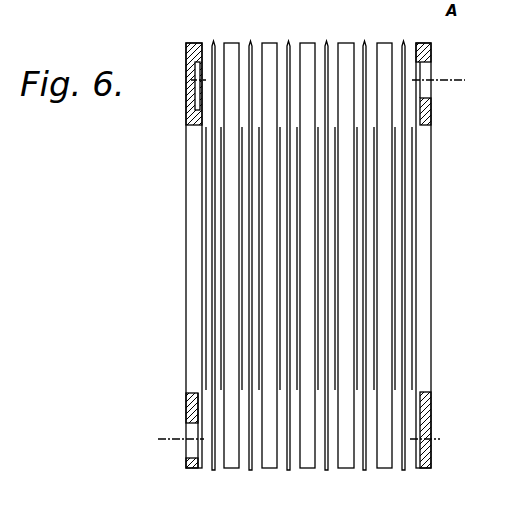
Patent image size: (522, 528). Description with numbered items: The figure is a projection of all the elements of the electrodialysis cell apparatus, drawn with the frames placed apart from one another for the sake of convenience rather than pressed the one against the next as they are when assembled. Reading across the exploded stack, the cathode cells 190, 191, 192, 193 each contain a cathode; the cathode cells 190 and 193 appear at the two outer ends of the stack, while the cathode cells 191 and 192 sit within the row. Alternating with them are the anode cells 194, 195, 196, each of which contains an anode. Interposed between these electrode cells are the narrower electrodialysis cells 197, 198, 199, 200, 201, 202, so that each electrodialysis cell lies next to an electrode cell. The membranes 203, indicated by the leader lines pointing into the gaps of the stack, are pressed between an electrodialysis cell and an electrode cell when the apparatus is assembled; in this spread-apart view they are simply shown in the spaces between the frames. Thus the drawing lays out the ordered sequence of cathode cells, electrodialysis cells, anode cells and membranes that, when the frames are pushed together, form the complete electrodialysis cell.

The cathode cell 190 is at (189, 467).
The cathode cell 191 is at (270, 467).
The cathode cell 192 is at (347, 467).
The cathode cell 193 is at (422, 467).
The anode cell 194 is at (231, 467).
The anode cell 195 is at (308, 467).
The anode cell 196 is at (385, 467).
The electrodialysis cell 197 is at (214, 41).
The electrodialysis cell 198 is at (251, 41).
The electrodialysis cell 199 is at (289, 41).
The electrodialysis cell 200 is at (327, 41).
The electrodialysis cell 201 is at (365, 41).
The electrodialysis cell 202 is at (405, 42).
The membranes 203 is at (360, 267).